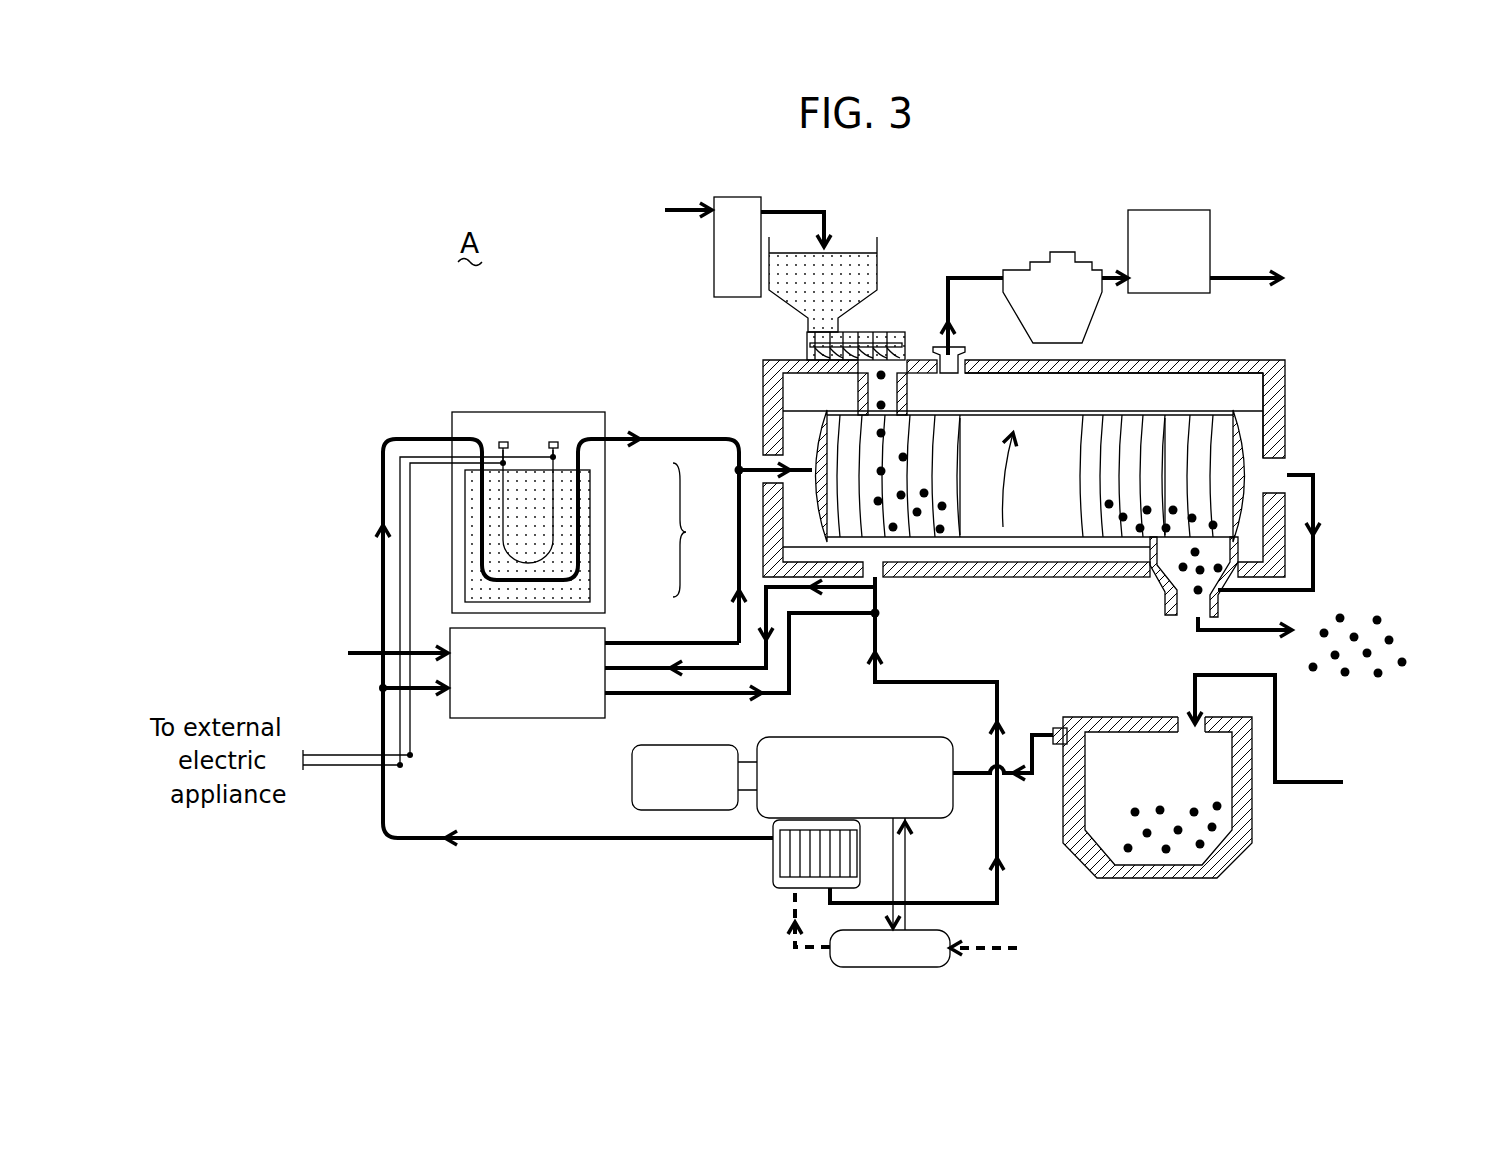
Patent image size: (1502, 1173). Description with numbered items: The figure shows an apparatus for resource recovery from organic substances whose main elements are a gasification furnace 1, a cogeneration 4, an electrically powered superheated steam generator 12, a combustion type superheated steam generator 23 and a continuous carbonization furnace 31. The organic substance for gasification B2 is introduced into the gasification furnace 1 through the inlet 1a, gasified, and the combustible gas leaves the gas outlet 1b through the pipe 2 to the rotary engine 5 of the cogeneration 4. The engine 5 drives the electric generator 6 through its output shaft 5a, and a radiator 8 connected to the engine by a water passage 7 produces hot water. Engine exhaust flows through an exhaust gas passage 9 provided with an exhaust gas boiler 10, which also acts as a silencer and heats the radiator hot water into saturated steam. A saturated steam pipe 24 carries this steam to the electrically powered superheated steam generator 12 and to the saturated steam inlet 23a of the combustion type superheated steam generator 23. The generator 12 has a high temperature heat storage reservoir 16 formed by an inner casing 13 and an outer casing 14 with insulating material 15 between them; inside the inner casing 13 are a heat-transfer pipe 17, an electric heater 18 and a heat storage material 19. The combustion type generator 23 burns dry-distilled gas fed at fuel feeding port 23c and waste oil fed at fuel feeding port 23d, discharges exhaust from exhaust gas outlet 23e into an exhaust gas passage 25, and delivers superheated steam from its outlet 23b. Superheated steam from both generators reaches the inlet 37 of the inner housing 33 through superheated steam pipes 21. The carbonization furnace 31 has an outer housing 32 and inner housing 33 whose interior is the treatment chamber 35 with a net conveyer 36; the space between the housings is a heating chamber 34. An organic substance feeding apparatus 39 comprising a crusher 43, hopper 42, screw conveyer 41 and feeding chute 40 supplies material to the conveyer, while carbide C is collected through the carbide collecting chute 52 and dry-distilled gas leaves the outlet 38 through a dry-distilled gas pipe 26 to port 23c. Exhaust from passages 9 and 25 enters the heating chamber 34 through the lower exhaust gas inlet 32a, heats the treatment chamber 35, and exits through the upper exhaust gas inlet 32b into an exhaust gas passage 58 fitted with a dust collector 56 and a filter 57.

The gasification furnace 1 is at (1170, 885).
The inlet 1a is at (1190, 720).
The gas outlet 1b is at (1053, 730).
The pipe 2 is at (1010, 778).
The cogeneration 4 is at (758, 887).
The rotary engine 5 is at (855, 737).
The output shaft 5a is at (757, 760).
The electric generator 6 is at (632, 792).
The water passage 7 is at (905, 865).
The radiator 8 is at (950, 934).
The exhaust gas passage 9 is at (997, 892).
The exhaust gas boiler 10 is at (773, 845).
The electrically powered superheated steam generator 12 is at (468, 408).
The inner casing 13 is at (592, 486).
The outer casing 14 is at (592, 522).
The insulating material 15 is at (592, 585).
The high temperature heat storage reservoir 16 is at (698, 530).
The heat-transfer pipe 17 is at (482, 533).
The electric heater 18 is at (555, 485).
The heat storage material 19 is at (525, 470).
The superheated steam pipe 21 is at (732, 478).
The combustion type superheated steam generator 23 is at (520, 718).
The saturated steam inlet 23a is at (447, 694).
The superheated steam outlet 23b is at (610, 645).
The fuel feeding port for dry-distilled gas 23c is at (608, 668).
The fuel feeding port for waste oil 23d is at (445, 652).
The exhaust gas outlet 23e is at (606, 694).
The saturated steam pipe 24 is at (512, 840).
The exhaust gas passage 25 is at (873, 655).
The dry-distilled gas pipe 26 is at (990, 577).
The carbonization furnace 31 is at (1178, 358).
The outer housing 32 is at (1240, 365).
The exhaust gas inlet 32a is at (880, 583).
The exhaust gas inlet 32b is at (962, 352).
The inner housing 33 is at (1093, 420).
The heating chamber 34 is at (1100, 373).
The treatment chamber 35 is at (950, 432).
The net conveyer 36 is at (1168, 478).
The inlet for superheated steam 37 is at (778, 455).
The outlet for generated gas 38 is at (1270, 480).
The organic substance feeding apparatus 39 is at (880, 250).
The organic substance feeding chute 40 is at (897, 395).
The screw conveyer 41 is at (860, 332).
The hopper 42 is at (880, 270).
The crusher 43 is at (714, 260).
The carbide collecting chute 52 is at (1150, 575).
The dust collector 56 is at (1040, 252).
The filter 57 is at (1212, 232).
The exhaust gas passage 58 is at (960, 278).
The organic substance for gasification B2 is at (1215, 827).
The carbide C is at (1392, 640).